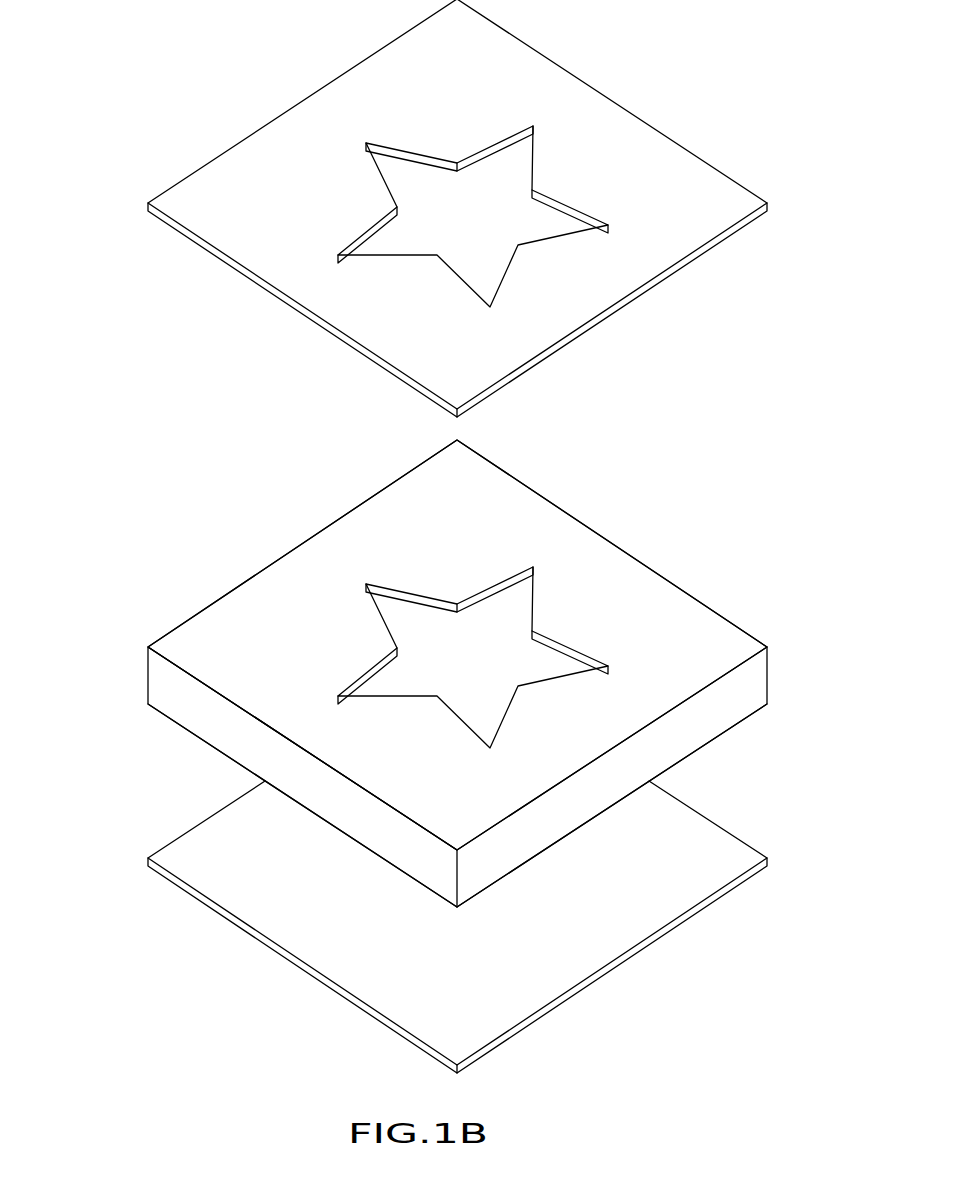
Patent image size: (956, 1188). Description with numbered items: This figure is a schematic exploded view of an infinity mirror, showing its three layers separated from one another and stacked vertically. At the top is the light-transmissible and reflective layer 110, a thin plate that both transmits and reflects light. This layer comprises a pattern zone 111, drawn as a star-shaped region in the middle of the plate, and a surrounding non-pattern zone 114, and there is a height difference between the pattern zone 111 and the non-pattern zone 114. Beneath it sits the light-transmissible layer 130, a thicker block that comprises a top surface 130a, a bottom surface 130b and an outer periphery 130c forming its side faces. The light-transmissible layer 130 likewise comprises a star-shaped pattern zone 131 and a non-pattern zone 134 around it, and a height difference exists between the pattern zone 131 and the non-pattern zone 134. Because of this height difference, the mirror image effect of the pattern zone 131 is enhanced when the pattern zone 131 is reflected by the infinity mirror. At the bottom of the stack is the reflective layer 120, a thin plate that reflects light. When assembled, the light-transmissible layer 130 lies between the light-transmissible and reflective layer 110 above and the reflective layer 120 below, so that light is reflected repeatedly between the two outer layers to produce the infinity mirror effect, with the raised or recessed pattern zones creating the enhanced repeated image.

The light-transmissible and reflective layer 110 is at (459, 208).
The pattern zone 111 is at (513, 185).
The non-pattern zone 114 is at (250, 163).
The reflective layer 120 is at (688, 832).
The light-transmissible layer 130 is at (414, 673).
The top surface 130a is at (257, 605).
The bottom surface 130b is at (193, 733).
The outer periphery 130c is at (148, 673).
The pattern zone 131 is at (513, 632).
The non-pattern zone 134 is at (573, 553).